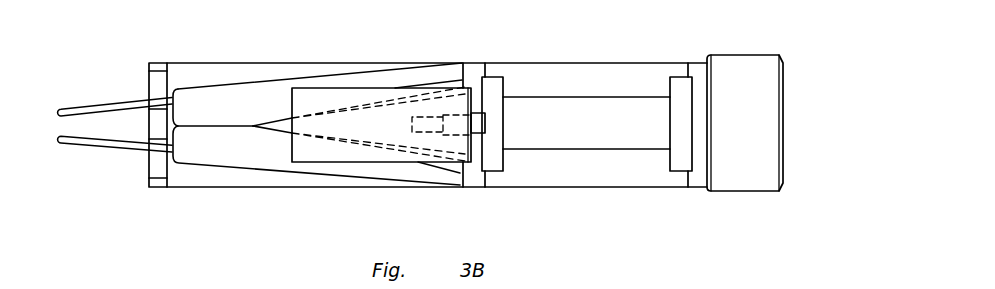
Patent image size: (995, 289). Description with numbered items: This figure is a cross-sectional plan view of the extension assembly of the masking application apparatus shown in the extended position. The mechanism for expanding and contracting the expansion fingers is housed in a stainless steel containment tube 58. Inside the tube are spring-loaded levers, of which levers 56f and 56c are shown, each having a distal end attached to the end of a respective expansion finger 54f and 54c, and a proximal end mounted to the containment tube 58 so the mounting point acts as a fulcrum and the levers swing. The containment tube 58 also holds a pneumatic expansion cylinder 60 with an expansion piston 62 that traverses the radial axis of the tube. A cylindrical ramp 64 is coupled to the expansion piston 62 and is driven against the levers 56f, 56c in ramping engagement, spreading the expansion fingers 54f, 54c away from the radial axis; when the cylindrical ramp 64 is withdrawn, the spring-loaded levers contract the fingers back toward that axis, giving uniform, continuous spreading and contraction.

The expansion finger 54f is at (93, 104).
The expansion finger 54c is at (99, 149).
The lever 56f is at (255, 80).
The lever 56c is at (270, 158).
The stainless steel containment tube 58 is at (618, 62).
The pneumatic expansion cylinder 60 is at (520, 97).
The expansion piston 62 is at (478, 120).
The cylindrical ramp 64 is at (325, 88).